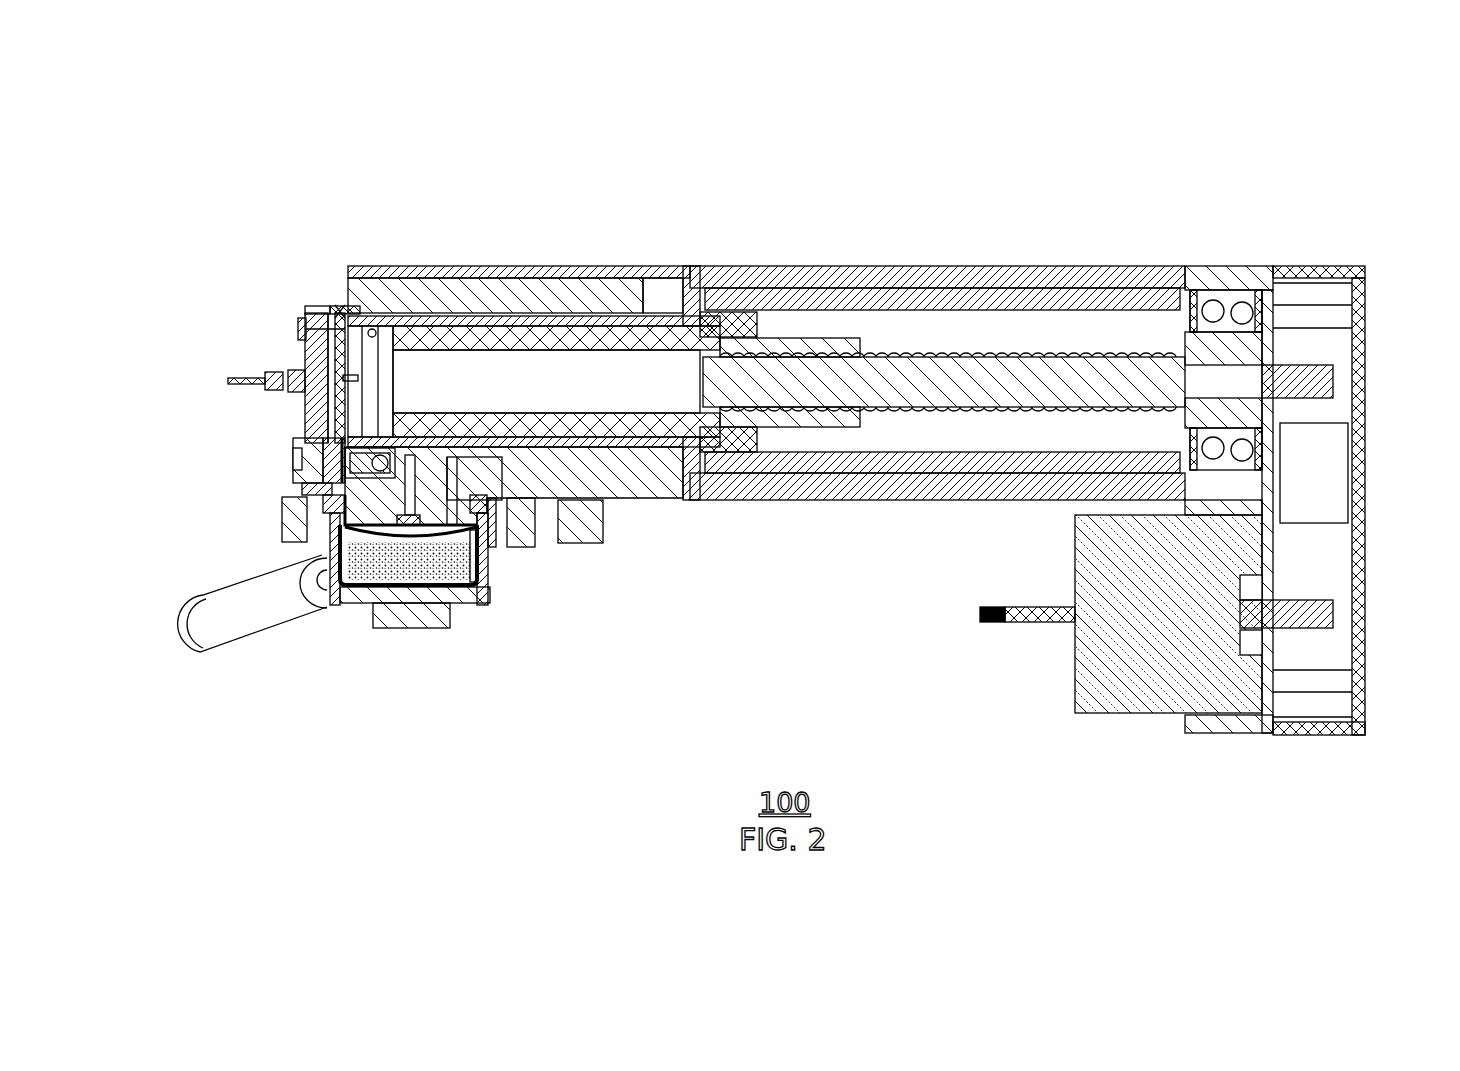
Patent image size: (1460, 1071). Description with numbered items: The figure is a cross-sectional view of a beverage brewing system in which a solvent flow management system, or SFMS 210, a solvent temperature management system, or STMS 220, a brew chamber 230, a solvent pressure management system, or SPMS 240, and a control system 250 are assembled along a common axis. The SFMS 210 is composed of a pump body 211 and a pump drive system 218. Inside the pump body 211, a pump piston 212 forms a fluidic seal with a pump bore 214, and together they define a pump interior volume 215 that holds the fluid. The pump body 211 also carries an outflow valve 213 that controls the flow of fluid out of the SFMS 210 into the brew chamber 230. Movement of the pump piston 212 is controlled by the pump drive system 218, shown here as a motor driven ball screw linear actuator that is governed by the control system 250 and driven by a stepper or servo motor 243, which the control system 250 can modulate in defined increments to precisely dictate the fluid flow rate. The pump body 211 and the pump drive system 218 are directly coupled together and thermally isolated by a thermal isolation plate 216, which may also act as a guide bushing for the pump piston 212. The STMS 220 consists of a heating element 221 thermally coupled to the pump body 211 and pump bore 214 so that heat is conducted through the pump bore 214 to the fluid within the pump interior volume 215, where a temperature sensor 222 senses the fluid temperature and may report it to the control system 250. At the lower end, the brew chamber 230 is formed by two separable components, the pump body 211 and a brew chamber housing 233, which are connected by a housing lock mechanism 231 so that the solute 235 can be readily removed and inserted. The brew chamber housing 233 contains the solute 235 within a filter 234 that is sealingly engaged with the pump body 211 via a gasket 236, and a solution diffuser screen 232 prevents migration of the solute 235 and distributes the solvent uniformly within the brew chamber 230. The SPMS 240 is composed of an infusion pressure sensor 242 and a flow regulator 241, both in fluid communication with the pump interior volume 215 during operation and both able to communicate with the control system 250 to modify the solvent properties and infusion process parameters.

The SFMS 210 is at (897, 320).
The pump body 211 is at (600, 265).
The pump piston 212 is at (507, 333).
The outflow valve 213 is at (347, 457).
The pump bore 214 is at (445, 320).
The pump interior volume 215 is at (350, 345).
The thermal isolation plate 216 is at (695, 270).
The pump drive system 218 is at (1050, 425).
The STMS 220 is at (342, 283).
The heating element 221 is at (372, 293).
The temperature sensor 222 is at (352, 378).
The brew chamber 230 is at (350, 516).
The housing lock mechanism 231 is at (533, 503).
The solution diffuser screen 232 is at (487, 508).
The brew chamber housing 233 is at (488, 577).
The filter 234 is at (492, 603).
The solute 235 is at (423, 562).
The gasket 236 is at (300, 482).
The SPMS 240 is at (420, 637).
The flow regulator 241 is at (372, 607).
The infusion pressure sensor 242 is at (310, 460).
The motor 243 is at (1113, 660).
The control system 250 is at (1335, 455).